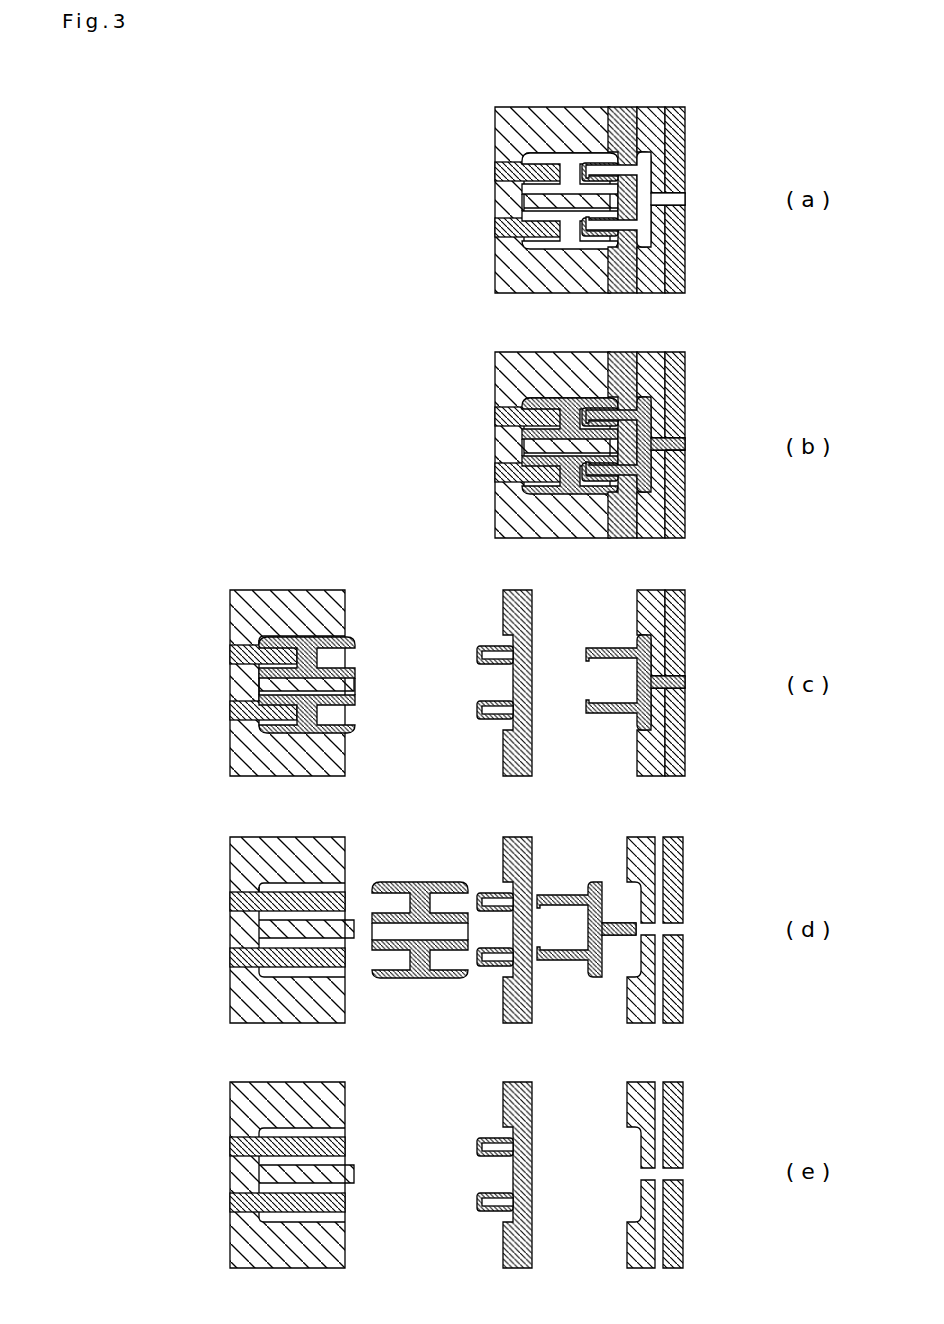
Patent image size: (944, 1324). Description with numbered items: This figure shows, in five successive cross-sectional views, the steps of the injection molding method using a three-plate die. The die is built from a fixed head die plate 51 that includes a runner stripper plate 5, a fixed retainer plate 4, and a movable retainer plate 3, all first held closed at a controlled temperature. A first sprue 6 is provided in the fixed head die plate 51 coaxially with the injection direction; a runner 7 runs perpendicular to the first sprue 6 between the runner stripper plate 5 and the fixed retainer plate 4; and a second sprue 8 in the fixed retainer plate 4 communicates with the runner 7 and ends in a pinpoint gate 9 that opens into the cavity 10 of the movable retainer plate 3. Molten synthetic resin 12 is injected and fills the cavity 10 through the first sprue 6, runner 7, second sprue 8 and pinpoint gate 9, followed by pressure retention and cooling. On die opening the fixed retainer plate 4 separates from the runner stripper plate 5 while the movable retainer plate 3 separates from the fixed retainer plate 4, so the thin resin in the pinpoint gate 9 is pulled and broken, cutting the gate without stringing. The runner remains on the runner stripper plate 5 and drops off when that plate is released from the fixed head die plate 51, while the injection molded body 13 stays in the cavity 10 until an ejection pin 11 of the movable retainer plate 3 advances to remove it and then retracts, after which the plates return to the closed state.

The movable retainer plate 3 is at (553, 108).
The fixed retainer plate 4 is at (614, 108).
The runner stripper plate 5 is at (650, 116).
The fixed head die plate 51 is at (677, 145).
The first sprue 6 is at (673, 462).
The runner 7 is at (650, 430).
The second sprue 8 is at (620, 403).
The pinpoint gate 9 is at (540, 432).
The cavity 10 is at (500, 385).
The ejection pin 11 is at (500, 178).
The synthetic resin 12 is at (684, 445).
The injection molded body 13 is at (352, 667).